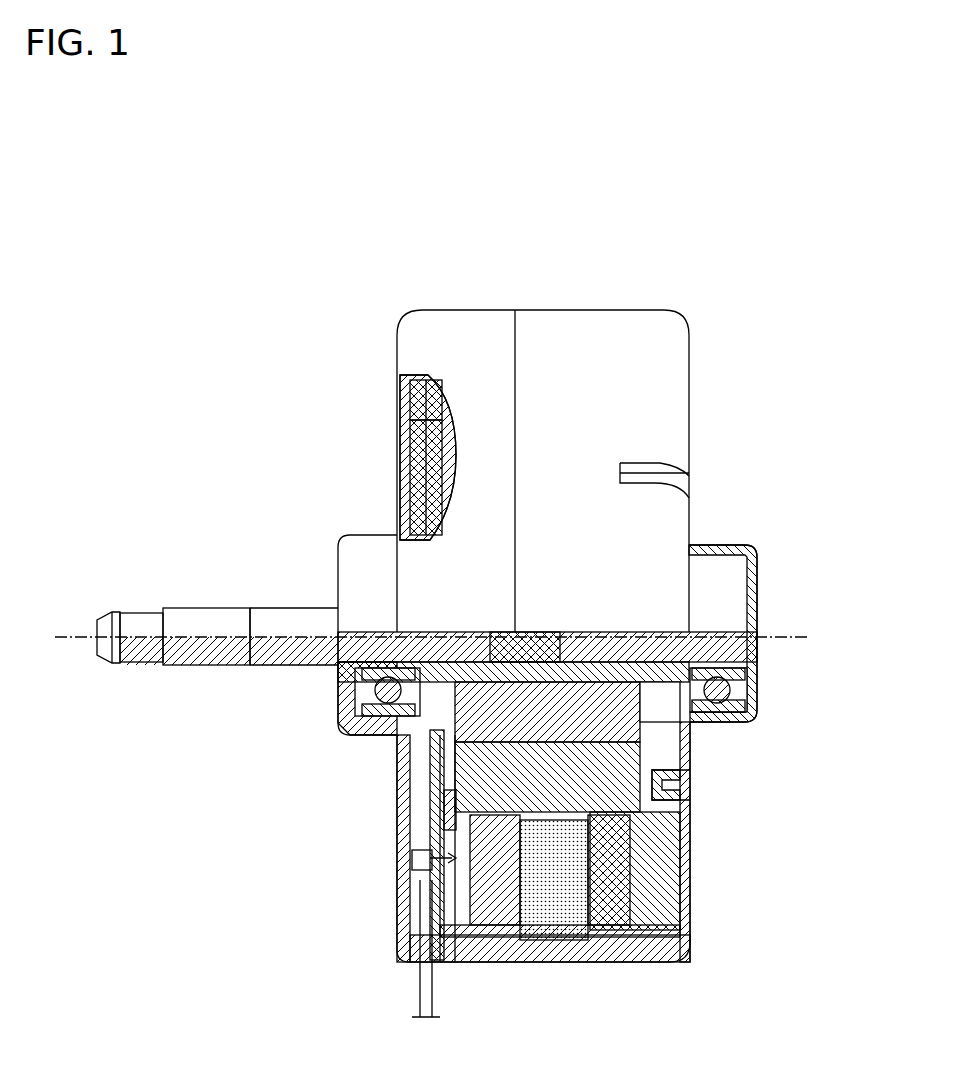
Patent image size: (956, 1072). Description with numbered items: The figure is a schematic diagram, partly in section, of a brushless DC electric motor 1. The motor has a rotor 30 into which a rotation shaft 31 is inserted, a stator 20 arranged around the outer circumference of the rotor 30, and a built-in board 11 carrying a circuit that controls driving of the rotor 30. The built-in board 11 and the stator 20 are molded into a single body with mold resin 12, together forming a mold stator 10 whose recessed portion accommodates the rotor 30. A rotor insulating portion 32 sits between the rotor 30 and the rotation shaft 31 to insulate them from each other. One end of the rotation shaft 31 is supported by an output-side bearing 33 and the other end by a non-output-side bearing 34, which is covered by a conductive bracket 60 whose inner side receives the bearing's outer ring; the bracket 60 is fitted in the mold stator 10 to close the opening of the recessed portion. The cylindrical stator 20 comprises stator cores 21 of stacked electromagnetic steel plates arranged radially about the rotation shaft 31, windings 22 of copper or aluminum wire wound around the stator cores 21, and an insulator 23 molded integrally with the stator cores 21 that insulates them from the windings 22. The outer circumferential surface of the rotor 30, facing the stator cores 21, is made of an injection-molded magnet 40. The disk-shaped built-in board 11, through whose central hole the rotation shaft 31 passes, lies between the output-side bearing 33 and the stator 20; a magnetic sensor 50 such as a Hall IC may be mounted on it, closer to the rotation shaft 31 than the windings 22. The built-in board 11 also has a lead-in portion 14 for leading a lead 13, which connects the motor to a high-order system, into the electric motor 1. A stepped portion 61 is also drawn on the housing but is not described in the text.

The electric motor 1 is at (748, 232).
The mold stator 10 is at (590, 312).
The built-in board 11 is at (400, 397).
The mold resin 12 is at (400, 382).
The lead 13 is at (420, 1000).
The lead-in portion 14 is at (410, 972).
The stator 20 is at (658, 912).
The stator cores 21 is at (552, 915).
The windings 22 is at (640, 870).
The insulator 23 is at (610, 962).
The rotor 30 is at (620, 867).
The rotation shaft 31 is at (140, 608).
The rotor insulating portion 32 is at (575, 722).
The output-side bearing 33 is at (395, 737).
The non-output-side bearing 34 is at (740, 725).
The magnet 40 is at (445, 812).
The magnetic sensor 50 is at (455, 770).
The bracket 60 is at (732, 545).
The step portion 61 is at (693, 797).